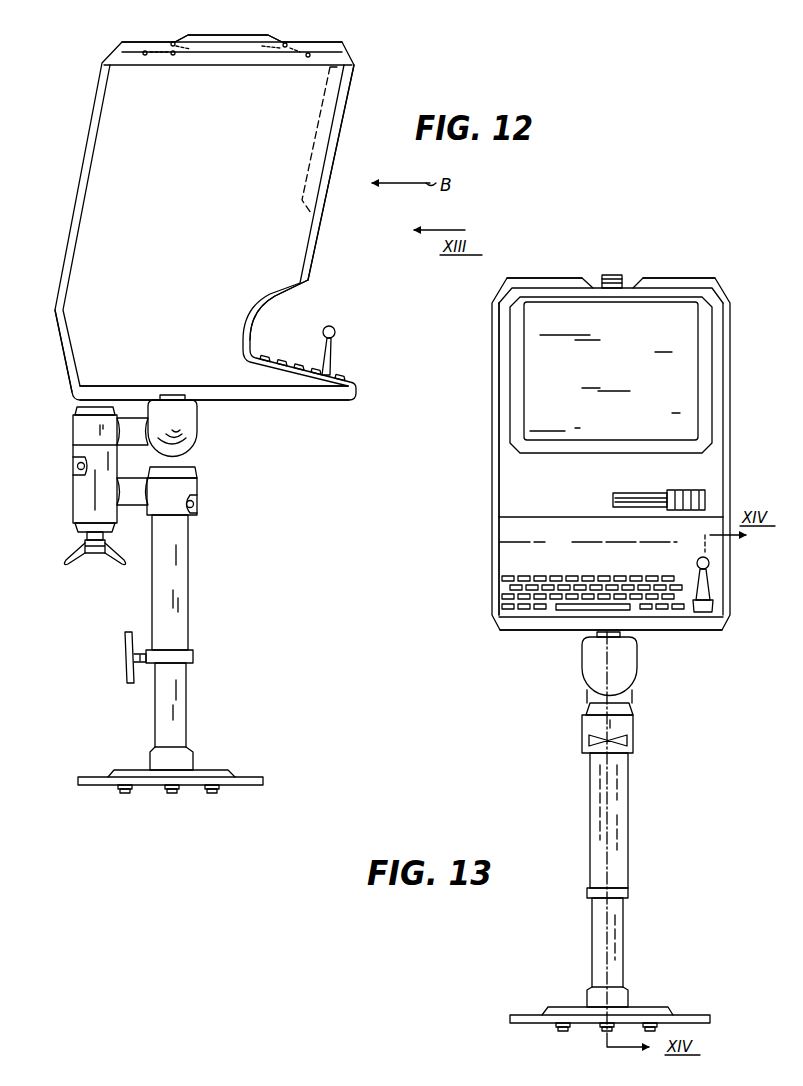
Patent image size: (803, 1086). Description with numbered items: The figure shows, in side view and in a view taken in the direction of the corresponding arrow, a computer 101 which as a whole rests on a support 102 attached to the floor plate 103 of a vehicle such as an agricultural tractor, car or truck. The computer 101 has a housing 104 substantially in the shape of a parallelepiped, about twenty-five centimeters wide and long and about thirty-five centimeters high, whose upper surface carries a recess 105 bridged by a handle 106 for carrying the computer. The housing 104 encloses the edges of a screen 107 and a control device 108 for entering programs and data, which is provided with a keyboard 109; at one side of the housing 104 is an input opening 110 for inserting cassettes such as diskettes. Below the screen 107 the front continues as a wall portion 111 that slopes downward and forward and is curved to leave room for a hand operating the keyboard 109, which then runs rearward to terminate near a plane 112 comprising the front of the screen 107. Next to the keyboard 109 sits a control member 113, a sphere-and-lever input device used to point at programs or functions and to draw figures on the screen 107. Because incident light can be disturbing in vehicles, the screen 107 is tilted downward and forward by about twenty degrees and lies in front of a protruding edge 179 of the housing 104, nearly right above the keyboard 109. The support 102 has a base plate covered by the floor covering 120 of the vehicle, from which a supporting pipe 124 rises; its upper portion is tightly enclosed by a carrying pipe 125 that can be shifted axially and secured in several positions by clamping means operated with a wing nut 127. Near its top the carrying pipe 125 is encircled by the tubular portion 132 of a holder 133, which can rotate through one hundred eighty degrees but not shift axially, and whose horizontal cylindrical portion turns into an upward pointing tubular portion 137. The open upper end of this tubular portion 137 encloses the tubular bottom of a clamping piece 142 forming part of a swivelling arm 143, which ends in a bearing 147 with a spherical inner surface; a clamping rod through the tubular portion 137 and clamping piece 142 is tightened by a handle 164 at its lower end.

In FIG. 12, the computer 101 is at (93, 115).
In FIG. 13, the computer 101 is at (736, 422).
In FIG. 12, the support 102 is at (170, 594).
In FIG. 13, the support 102 is at (595, 842).
In FIG. 12, the floor plate 103 is at (100, 788).
In FIG. 13, the floor plate 103 is at (520, 1022).
In FIG. 12, the housing 104 is at (78, 342).
In FIG. 13, the housing 104 is at (492, 440).
In FIG. 12, the recess 105 is at (330, 38).
In FIG. 13, the recess 105 is at (632, 285).
In FIG. 12, the handle 106 is at (213, 38).
In FIG. 13, the handle 106 is at (612, 274).
In FIG. 12, the screen 107 is at (318, 152).
In FIG. 13, the screen 107 is at (535, 390).
In FIG. 12, the control device 108 is at (292, 388).
In FIG. 13, the control device 108 is at (530, 628).
In FIG. 12, the keyboard 109 is at (292, 360).
In FIG. 13, the keyboard 109 is at (568, 568).
In FIG. 13, the input opening 110 is at (656, 495).
In FIG. 12, the wall portion 111 is at (275, 304).
In FIG. 13, the wall portion 111 is at (561, 511).
In FIG. 12, the plane 112 is at (320, 259).
In FIG. 13, the plane 112 is at (594, 465).
In FIG. 12, the control member 113 is at (339, 340).
In FIG. 13, the control member 113 is at (696, 564).
In FIG. 12, the floor covering 120 is at (191, 787).
In FIG. 13, the floor covering 120 is at (595, 1018).
In FIG. 12, the supporting pipe 124 is at (183, 715).
In FIG. 13, the supporting pipe 124 is at (598, 938).
In FIG. 12, the carrying pipe 125 is at (193, 603).
In FIG. 13, the carrying pipe 125 is at (590, 856).
In FIG. 12, the wing nut 127 is at (130, 665).
In FIG. 12, the tubular portion 132 is at (198, 487).
In FIG. 12, the holder 133 is at (135, 509).
In FIG. 13, the holder 133 is at (580, 740).
In FIG. 12, the tubular portion 137 is at (73, 503).
In FIG. 12, the clamping piece 142 is at (78, 432).
In FIG. 12, the swivelling arm 143 is at (139, 410).
In FIG. 13, the swivelling arm 143 is at (582, 673).
In FIG. 12, the bearing 147 is at (198, 430).
In FIG. 13, the bearing 147 is at (638, 664).
In FIG. 12, the handle 164 is at (68, 562).
In FIG. 12, the protruding edge 179 is at (355, 62).